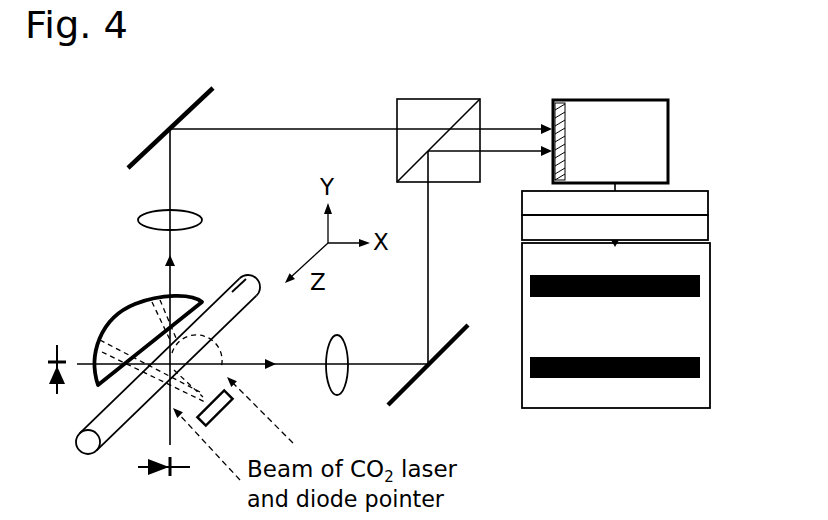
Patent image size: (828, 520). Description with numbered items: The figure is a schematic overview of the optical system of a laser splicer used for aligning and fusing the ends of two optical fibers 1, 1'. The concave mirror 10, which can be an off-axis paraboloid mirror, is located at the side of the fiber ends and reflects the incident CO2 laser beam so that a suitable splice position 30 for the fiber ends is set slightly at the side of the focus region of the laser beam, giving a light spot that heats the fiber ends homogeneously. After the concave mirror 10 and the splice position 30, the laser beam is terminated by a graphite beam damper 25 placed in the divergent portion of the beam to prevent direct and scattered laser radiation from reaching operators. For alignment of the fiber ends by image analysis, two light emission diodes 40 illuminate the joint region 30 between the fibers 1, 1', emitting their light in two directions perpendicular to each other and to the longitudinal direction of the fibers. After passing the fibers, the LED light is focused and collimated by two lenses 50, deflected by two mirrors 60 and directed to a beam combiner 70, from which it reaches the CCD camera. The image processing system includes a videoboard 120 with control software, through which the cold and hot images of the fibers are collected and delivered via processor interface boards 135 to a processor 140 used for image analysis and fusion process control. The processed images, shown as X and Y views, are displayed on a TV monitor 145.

The optical fiber 1 is at (175, 374).
The optical fiber 1' is at (261, 303).
The concave mirror 10 is at (117, 322).
The beam damper 25 is at (229, 407).
The splice position 30 is at (203, 341).
The light emission diode 40 is at (52, 349).
The lens 50 is at (139, 218).
The mirror 60 is at (204, 95).
The beam combiner 70 is at (396, 107).
The videoboard 120 is at (639, 100).
The processor interface board 135 is at (708, 199).
The processor 140 is at (709, 228).
The TV monitor 145 is at (706, 397).